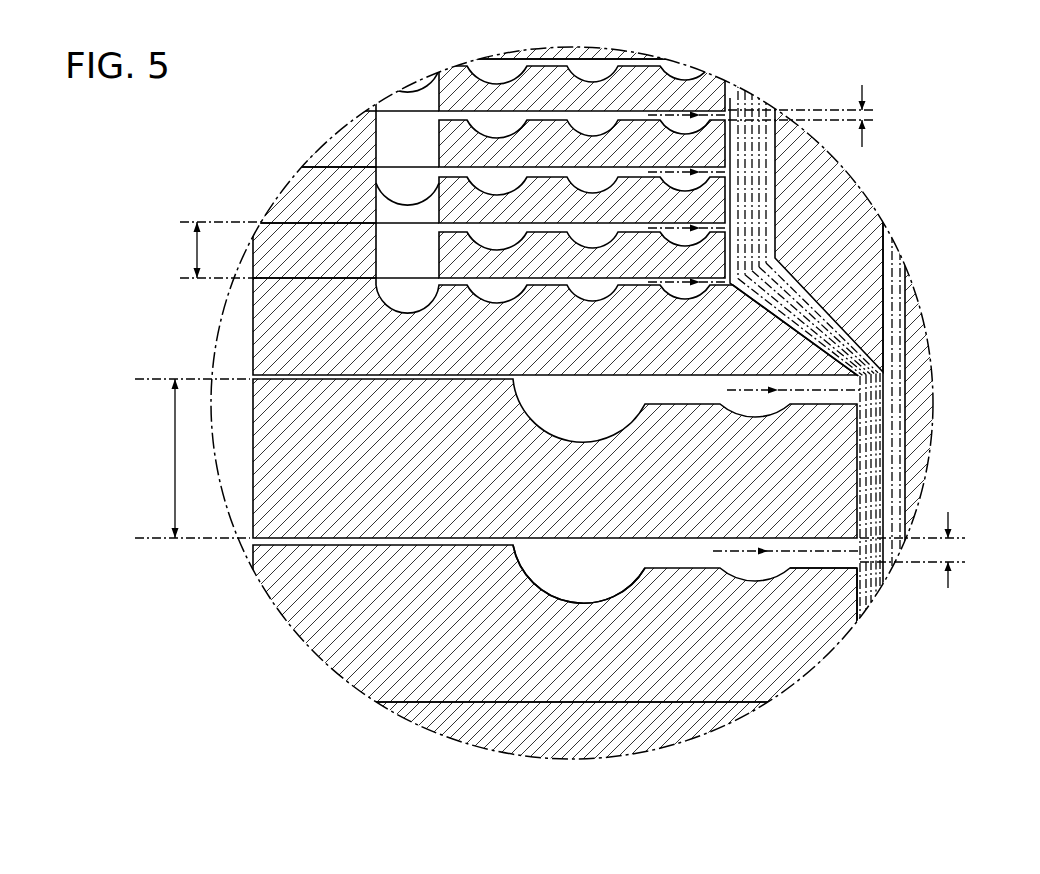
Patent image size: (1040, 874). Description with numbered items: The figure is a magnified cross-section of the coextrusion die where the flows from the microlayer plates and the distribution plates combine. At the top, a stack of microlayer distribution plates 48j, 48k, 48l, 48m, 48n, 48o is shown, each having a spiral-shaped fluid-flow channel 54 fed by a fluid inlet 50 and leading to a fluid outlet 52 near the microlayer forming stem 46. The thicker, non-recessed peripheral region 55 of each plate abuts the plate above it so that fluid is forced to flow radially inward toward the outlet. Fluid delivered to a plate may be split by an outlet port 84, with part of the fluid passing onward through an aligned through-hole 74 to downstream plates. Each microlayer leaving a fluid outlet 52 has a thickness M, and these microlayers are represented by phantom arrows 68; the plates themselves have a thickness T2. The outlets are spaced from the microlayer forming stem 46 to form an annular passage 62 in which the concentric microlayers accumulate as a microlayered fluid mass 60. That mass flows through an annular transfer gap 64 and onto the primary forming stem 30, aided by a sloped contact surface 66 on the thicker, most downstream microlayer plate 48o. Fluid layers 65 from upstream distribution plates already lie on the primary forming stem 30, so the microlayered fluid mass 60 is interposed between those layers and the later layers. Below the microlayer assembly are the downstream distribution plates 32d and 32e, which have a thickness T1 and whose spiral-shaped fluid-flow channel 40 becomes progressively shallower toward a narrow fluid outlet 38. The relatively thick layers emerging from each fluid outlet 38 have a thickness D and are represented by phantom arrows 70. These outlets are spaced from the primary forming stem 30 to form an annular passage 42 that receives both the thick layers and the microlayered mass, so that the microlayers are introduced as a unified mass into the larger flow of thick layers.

The primary forming stem 30 is at (938, 428).
The distribution plate 32d is at (388, 461).
The distribution plate 32e is at (287, 590).
The fluid outlet 38 is at (833, 558).
The spiral-shaped fluid-flow channel 40 is at (600, 580).
The annular passage 42 is at (867, 600).
The microlayer forming stem 46 is at (832, 187).
The microlayer distribution plate 48j is at (547, 50).
The microlayer distribution plate 48k is at (453, 73).
The microlayer distribution plate 48l is at (350, 133).
The microlayer distribution plate 48m is at (300, 193).
The microlayer distribution plate 48n is at (324, 263).
The microlayer distribution plate 48o is at (257, 332).
The fluid inlet 50 is at (403, 184).
The fluid outlet 52 is at (713, 113).
The spiral-shaped fluid-flow channel 54 is at (593, 67).
The non-recessed peripheral region 55 is at (280, 278).
The microlayered fluid mass 60 is at (775, 290).
The annular passage 62 is at (733, 100).
The annular transfer gap 64 is at (870, 377).
The fluid layers 65 is at (900, 327).
The sloped contact surface 66 is at (818, 332).
The phantom arrows 68 is at (693, 112).
The phantom arrows 70 is at (805, 547).
The through-hole 74 is at (403, 145).
The outlet port 84 is at (390, 103).
The microlayer thickness M is at (870, 116).
The thick layer thickness D is at (960, 551).
The distribution plate thickness T1 is at (192, 458).
The microlayer plate thickness T2 is at (195, 247).